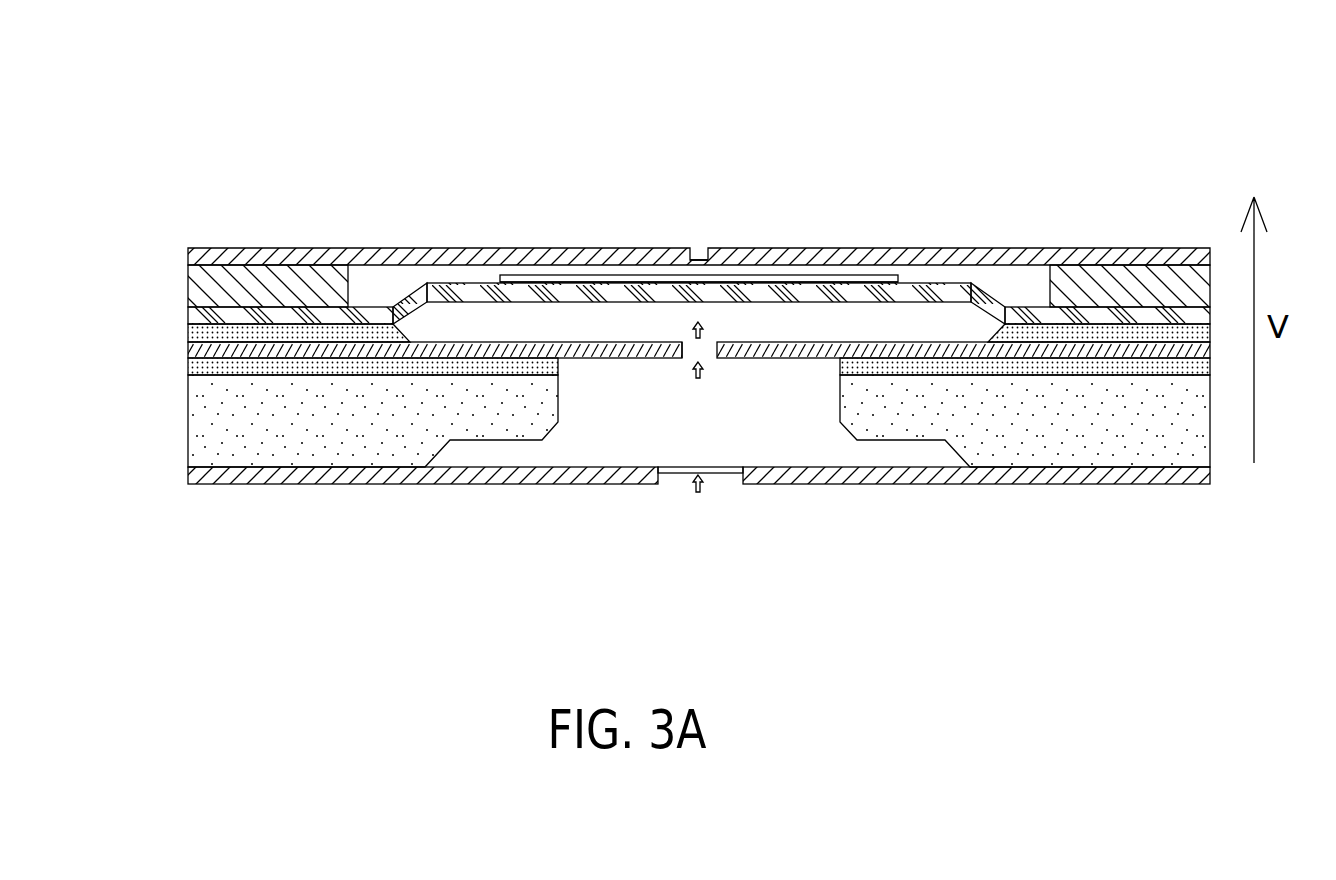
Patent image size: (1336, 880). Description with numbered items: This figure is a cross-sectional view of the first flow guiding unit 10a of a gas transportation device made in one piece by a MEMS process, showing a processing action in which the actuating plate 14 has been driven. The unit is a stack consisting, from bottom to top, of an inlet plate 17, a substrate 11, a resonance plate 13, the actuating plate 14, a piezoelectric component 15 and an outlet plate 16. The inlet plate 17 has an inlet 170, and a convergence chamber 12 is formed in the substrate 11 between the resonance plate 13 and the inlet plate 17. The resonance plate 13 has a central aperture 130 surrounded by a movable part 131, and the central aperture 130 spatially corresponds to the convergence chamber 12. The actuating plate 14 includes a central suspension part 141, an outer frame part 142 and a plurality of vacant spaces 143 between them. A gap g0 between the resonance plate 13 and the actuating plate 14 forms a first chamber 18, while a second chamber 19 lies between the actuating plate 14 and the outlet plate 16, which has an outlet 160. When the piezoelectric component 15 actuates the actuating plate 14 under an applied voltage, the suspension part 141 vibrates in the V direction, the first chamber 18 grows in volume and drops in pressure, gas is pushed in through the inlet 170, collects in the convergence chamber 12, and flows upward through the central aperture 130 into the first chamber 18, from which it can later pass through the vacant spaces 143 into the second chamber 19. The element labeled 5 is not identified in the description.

The first flow guiding unit 10a is at (1097, 103).
The outlet plate 16 is at (205, 257).
The outlet 160 is at (697, 250).
The sealing portion 5 is at (708, 258).
The actuating plate 14 is at (659, 247).
The outer frame part 142 is at (302, 308).
The vacant spaces 143 is at (402, 312).
The suspension part 141 is at (908, 295).
The piezoelectric component 15 is at (508, 280).
The second chamber 19 is at (803, 274).
The gap g0 is at (200, 333).
The resonance plate 13 is at (659, 438).
The movable part 131 is at (605, 357).
The central aperture 130 is at (692, 380).
The substrate 11 is at (659, 456).
The convergence chamber 12 is at (627, 423).
The first chamber 18 is at (763, 320).
The inlet plate 17 is at (659, 534).
The inlet 170 is at (697, 497).